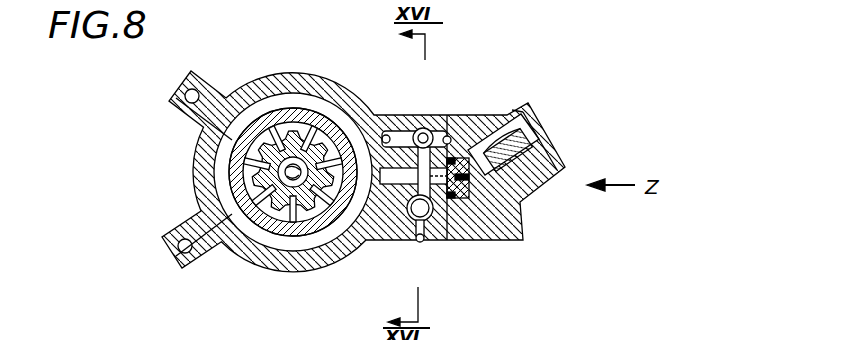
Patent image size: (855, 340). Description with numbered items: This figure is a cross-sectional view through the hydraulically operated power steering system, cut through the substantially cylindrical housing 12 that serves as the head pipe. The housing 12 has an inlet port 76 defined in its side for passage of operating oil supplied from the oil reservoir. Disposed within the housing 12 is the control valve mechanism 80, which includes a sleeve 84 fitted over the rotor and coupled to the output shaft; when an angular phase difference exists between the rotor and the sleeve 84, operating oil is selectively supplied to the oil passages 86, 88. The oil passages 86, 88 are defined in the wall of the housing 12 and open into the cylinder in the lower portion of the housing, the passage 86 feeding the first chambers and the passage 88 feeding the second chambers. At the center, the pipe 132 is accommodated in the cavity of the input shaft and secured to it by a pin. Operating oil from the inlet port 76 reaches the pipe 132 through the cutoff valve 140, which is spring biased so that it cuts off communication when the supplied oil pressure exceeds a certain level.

The housing 12 is at (272, 263).
The inlet port 76 is at (528, 140).
The control valve mechanism 80 is at (310, 105).
The sleeve 84 is at (314, 226).
The oil passage 86 is at (198, 92).
The oil passage 88 is at (178, 262).
The pipe 132 is at (243, 173).
The cutoff valve 140 is at (430, 128).